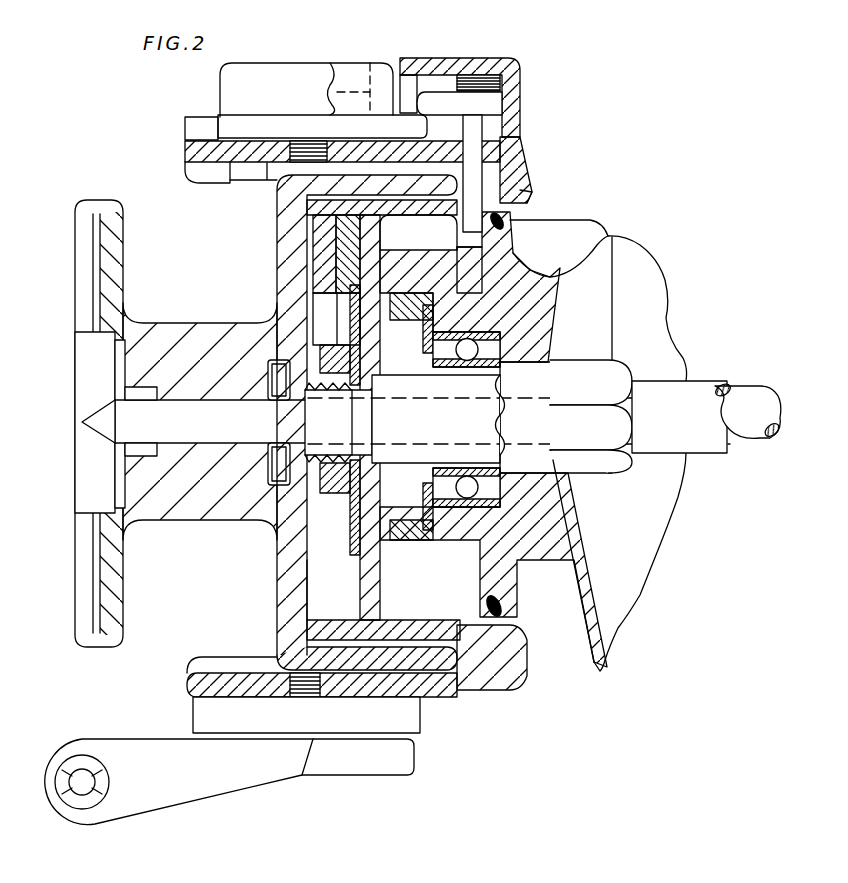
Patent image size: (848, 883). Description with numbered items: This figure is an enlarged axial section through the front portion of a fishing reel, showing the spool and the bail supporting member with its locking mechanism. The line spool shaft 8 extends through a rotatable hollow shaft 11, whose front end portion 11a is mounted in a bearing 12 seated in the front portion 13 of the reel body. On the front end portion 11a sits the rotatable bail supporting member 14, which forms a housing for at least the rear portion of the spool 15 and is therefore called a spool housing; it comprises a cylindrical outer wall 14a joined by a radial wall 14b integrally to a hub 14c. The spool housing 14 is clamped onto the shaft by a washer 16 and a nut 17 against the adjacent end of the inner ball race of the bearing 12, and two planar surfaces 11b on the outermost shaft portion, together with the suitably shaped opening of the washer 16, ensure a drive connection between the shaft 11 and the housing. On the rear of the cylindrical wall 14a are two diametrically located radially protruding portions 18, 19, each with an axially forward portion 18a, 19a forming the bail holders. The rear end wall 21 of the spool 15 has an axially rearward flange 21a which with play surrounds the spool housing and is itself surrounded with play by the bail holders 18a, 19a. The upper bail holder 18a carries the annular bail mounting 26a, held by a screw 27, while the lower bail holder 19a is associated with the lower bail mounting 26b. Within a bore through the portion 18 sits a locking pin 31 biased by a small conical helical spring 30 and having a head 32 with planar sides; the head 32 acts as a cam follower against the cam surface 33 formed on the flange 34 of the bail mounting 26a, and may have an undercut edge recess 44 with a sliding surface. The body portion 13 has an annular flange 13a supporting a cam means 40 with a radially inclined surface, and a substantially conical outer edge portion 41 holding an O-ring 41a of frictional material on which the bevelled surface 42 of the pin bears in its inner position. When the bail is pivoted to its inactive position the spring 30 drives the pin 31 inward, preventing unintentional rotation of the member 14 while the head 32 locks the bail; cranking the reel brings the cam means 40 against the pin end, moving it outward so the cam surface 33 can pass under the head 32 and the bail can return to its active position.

The line spool shaft 8 is at (750, 402).
The rotatable hollow shaft 11 is at (660, 392).
The front end portion of the hollow shaft 11a is at (445, 432).
The planar surfaces 11b is at (340, 432).
The bearing 12 is at (503, 405).
The front portion of the reel body 13 is at (440, 298).
The annular flange 13a is at (520, 235).
The bail supporting member (spool housing) 14 is at (356, 588).
The cylindrical outer wall 14a is at (368, 624).
The radial wall 14b is at (372, 254).
The hub 14c is at (413, 541).
The spool 15 is at (189, 316).
The washer 16 is at (353, 537).
The nut 17 is at (325, 483).
The radially protruding portion (upper projection) 18 is at (522, 164).
The upper bail holder 18a is at (185, 152).
The radially protruding portion (lower projection) 19 is at (510, 666).
The lower bail holder 19a is at (188, 684).
The rear end wall of the spool 21 is at (290, 238).
The axially rearwardly directed flange 21a is at (455, 672).
The bail mounting (upper) 26a is at (248, 86).
The lower bail mounting 26b is at (412, 724).
The screw 27 is at (265, 170).
The spring 30 is at (521, 66).
The pin 31 is at (488, 128).
The pin head 32 is at (504, 103).
The cam surface 33 is at (330, 88).
The flange 34 is at (236, 165).
The cam means 40 is at (455, 258).
The conical outer edge portion 41 is at (505, 610).
The O-ring 41a is at (502, 217).
The bevelled surface 42 is at (531, 190).
The undercut edge recess 44 is at (420, 75).